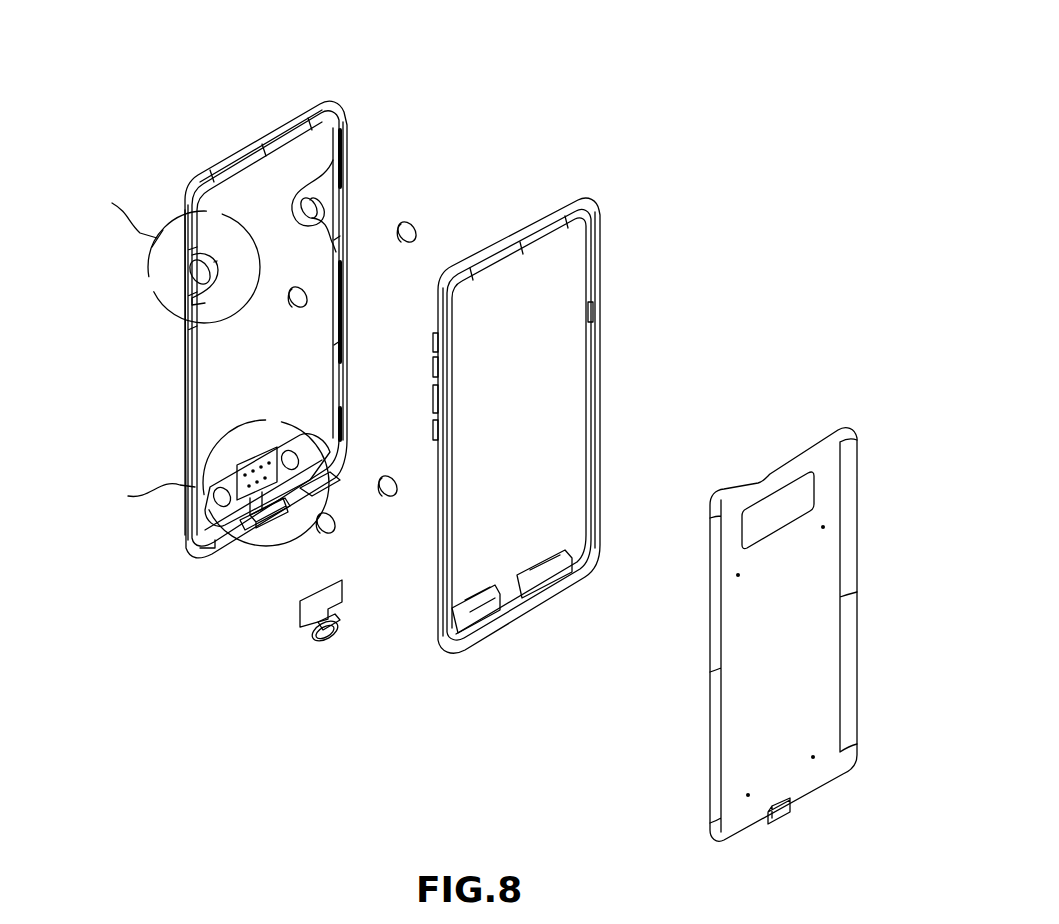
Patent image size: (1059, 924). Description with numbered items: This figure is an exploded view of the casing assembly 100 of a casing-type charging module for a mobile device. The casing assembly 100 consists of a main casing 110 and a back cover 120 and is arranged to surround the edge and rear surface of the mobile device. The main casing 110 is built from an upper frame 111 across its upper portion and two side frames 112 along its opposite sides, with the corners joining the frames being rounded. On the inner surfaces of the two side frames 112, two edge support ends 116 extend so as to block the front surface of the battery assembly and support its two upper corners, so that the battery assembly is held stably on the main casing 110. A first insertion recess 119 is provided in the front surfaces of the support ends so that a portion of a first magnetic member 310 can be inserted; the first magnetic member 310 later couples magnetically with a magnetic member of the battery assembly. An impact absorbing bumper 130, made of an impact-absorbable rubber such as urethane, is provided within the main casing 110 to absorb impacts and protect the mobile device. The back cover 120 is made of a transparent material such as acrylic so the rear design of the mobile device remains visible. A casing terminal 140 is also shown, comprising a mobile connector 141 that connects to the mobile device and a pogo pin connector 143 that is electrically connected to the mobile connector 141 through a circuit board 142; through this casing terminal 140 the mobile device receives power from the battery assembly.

The casing assembly 100 is at (762, 71).
The main casing 110 is at (289, 100).
The upper frame 111 is at (238, 155).
The side frame 112 is at (183, 400).
The edge support end 116 is at (322, 192).
The first insertion recess 119 is at (333, 283).
The back cover 120 is at (790, 443).
The impact absorbing bumper 130 is at (552, 190).
The casing terminal 140 is at (285, 665).
The mobile connector 141 is at (338, 636).
The circuit board 142 is at (322, 648).
The pogo pin connector 143 is at (300, 603).
The first magnetic member 310 is at (417, 230).